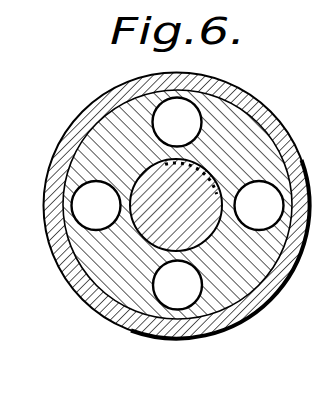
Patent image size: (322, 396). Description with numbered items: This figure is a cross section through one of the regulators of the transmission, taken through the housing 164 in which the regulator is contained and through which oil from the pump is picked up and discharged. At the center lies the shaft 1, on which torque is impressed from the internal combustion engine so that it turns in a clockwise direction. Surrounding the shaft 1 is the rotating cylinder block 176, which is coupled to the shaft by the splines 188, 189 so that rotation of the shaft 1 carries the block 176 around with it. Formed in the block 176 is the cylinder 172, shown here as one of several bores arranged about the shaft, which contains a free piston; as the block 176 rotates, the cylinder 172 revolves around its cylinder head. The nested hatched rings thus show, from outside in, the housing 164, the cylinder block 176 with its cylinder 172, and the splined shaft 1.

The shaft 1 is at (152, 208).
The housing 164 is at (94, 113).
The rotating cylinder block 176 is at (239, 126).
The cylinder 172 is at (198, 132).
The spline 188 is at (162, 164).
The spline 189 is at (216, 185).